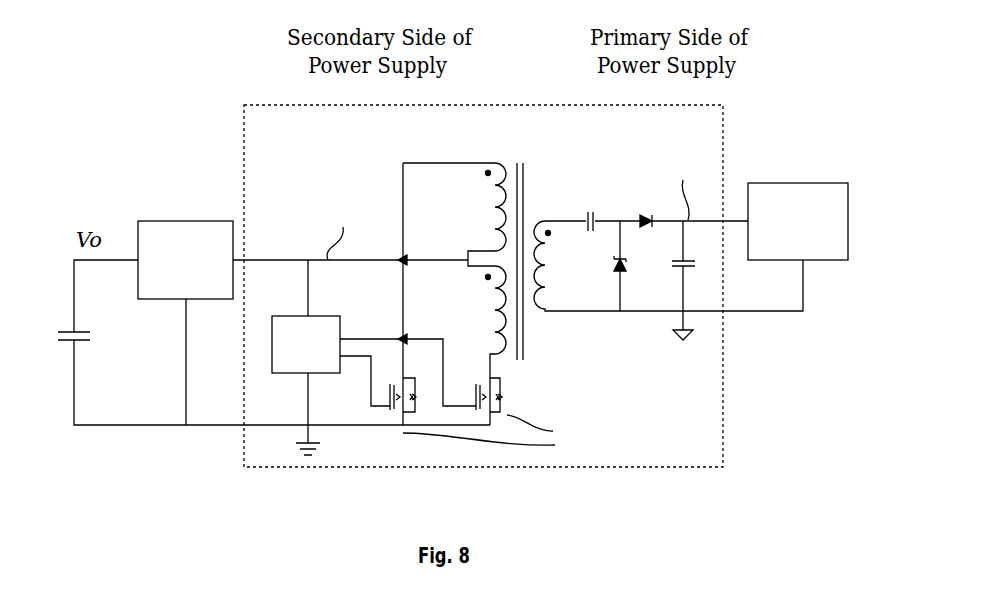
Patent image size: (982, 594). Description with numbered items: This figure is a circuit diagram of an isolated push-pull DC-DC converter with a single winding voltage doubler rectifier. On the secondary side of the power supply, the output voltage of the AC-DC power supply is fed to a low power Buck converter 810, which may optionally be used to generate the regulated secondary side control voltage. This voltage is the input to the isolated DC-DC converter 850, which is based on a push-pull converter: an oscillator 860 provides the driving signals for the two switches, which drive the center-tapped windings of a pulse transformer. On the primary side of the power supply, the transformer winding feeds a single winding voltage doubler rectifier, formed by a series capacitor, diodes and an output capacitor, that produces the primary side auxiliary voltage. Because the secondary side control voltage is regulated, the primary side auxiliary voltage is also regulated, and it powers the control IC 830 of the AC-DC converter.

The Buck converter 810 is at (161, 221).
The control IC 830 is at (777, 182).
The isolated DC-DC converter 850 is at (259, 105).
The oscillator 860 is at (290, 317).